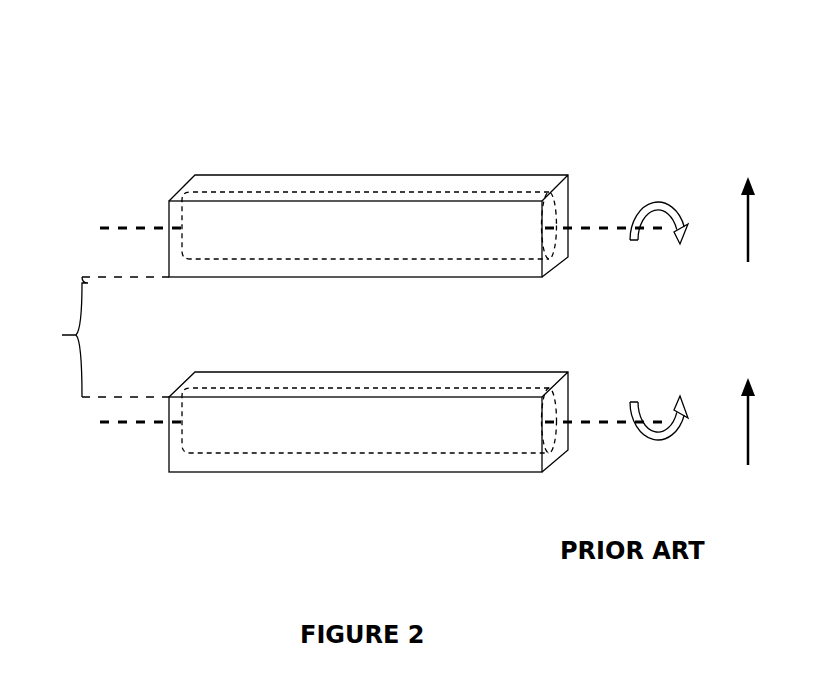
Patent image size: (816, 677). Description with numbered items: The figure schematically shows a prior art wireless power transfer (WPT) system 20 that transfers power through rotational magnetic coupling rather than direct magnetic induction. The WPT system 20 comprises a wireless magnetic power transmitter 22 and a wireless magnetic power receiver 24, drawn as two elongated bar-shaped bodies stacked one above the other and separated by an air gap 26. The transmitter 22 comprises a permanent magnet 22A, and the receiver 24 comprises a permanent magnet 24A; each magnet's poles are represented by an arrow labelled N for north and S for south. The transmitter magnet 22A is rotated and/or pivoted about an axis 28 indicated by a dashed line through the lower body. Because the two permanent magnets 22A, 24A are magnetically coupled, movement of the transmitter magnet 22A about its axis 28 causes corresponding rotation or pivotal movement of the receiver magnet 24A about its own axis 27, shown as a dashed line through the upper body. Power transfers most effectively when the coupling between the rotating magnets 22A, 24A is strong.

The WPT system 20 is at (533, 128).
The wireless magnetic power transmitter 22 is at (190, 473).
The transmitter permanent magnet 22A is at (277, 436).
The wireless magnetic power receiver 24 is at (218, 176).
The receiver permanent magnet 24A is at (210, 215).
The air gap 26 is at (94, 337).
The receiver axis 27 is at (108, 226).
The transmitter axis 28 is at (110, 424).